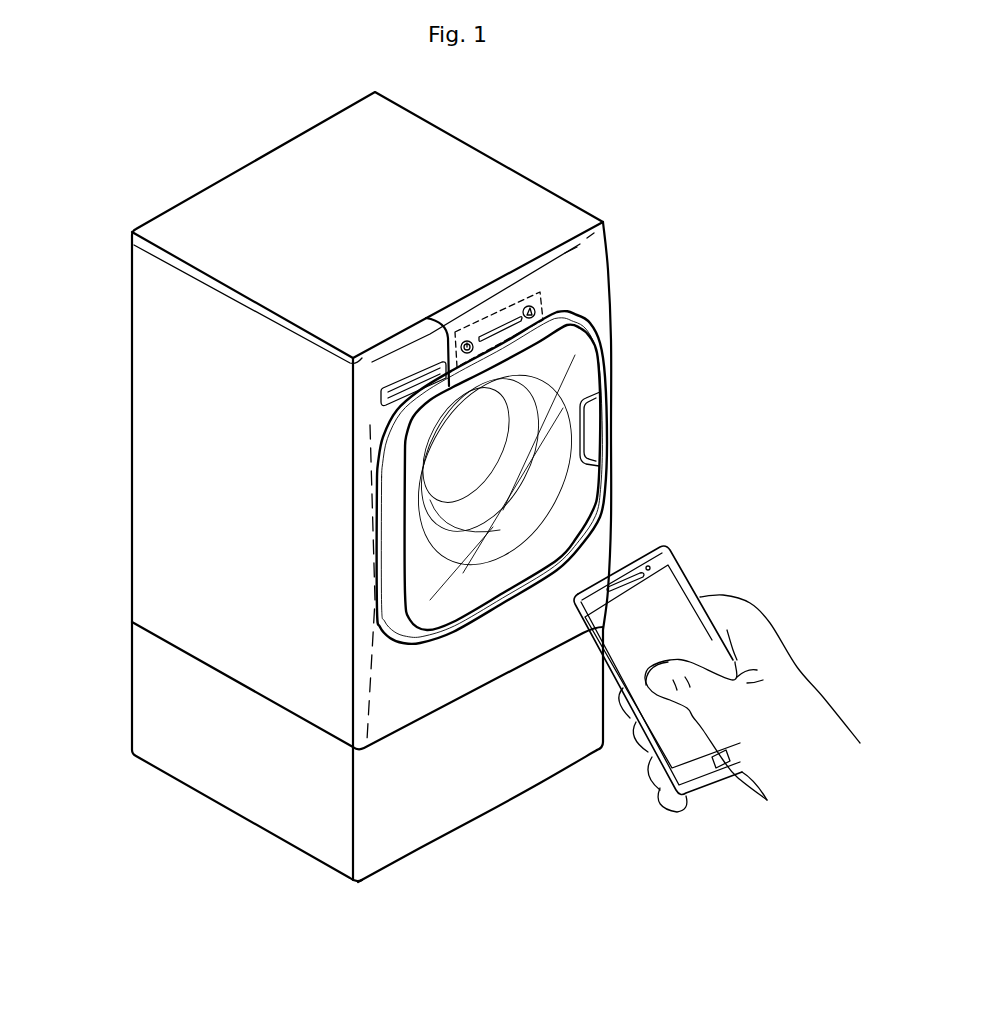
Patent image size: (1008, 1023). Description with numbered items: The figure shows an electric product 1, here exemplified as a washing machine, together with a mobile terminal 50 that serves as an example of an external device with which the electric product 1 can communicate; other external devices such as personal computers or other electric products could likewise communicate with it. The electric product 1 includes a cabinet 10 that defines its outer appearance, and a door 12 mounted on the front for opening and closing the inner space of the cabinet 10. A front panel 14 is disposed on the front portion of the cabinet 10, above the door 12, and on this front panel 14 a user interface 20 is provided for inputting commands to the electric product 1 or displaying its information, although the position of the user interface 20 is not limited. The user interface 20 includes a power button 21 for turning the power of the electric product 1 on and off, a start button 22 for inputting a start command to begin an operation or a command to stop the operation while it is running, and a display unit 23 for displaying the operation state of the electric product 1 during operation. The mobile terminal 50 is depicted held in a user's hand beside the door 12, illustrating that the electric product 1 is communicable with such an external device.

The electric product 1 is at (578, 167).
The cabinet 10 is at (157, 417).
The door 12 is at (597, 547).
The front panel 14 is at (588, 272).
The user interface 20 is at (457, 334).
The power button 21 is at (467, 340).
The start button 22 is at (528, 305).
The display unit 23 is at (498, 330).
The mobile terminal 50 is at (687, 740).